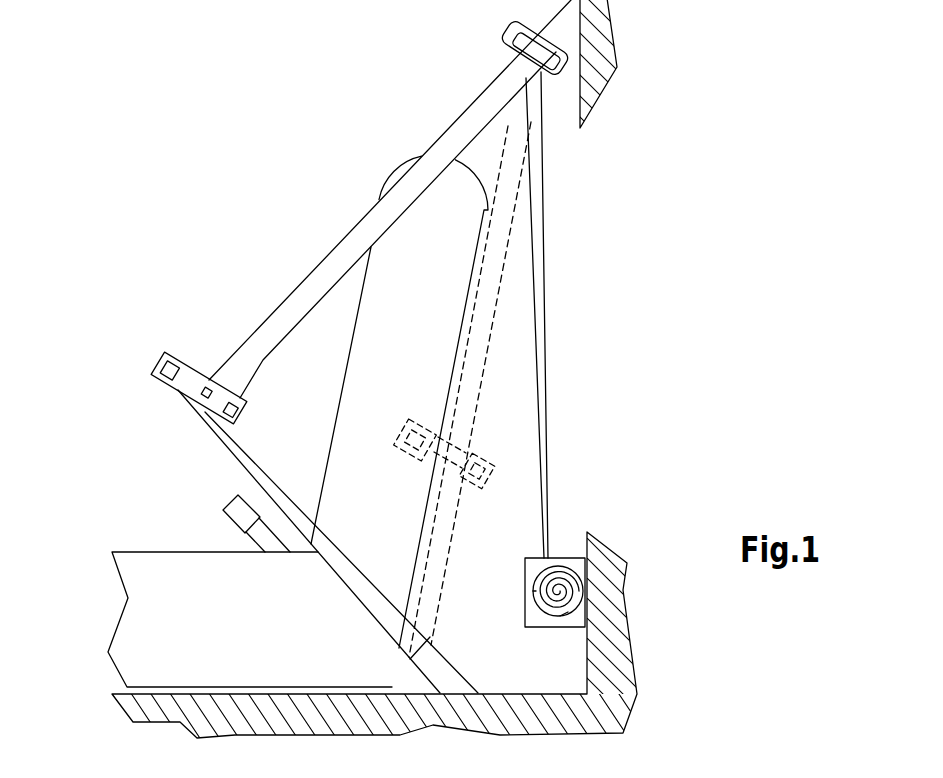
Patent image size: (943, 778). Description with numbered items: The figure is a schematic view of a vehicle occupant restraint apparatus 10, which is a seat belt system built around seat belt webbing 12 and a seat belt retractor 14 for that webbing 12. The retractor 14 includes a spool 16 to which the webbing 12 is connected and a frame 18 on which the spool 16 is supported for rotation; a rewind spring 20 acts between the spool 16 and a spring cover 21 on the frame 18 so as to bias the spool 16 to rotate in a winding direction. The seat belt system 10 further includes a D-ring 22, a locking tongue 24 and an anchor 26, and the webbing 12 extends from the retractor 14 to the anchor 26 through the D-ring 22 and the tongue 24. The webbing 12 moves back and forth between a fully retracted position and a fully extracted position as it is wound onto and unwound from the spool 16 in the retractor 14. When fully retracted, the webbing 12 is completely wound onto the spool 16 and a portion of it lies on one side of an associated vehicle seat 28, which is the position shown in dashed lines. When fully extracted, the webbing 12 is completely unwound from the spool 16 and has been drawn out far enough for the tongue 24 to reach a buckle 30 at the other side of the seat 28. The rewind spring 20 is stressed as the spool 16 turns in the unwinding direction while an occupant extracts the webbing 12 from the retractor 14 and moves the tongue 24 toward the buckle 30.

The vehicle occupant restraint apparatus 10 is at (347, 82).
The seat belt webbing 12 is at (544, 291).
The seat belt retractor 14 is at (560, 528).
The spool 16 is at (583, 579).
The frame 18 is at (522, 563).
The rewind spring 20 is at (568, 612).
The spring cover 21 is at (536, 591).
The D-ring 22 is at (510, 36).
The locking tongue 24 is at (152, 366).
The anchor 26 is at (439, 677).
The vehicle seat 28 is at (138, 552).
The buckle 30 is at (229, 505).